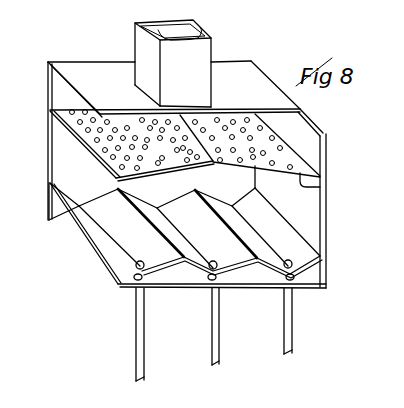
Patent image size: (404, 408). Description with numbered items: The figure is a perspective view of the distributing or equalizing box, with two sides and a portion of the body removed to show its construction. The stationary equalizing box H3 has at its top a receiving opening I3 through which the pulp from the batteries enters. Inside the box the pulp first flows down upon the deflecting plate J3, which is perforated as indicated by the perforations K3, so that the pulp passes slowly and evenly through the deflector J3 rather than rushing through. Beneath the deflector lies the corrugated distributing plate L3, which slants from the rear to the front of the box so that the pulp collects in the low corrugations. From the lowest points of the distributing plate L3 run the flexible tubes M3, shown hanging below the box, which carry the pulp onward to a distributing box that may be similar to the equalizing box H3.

The receiving opening I3 is at (205, 35).
The perforations K3 is at (275, 137).
The stationary equalizing box H3 is at (326, 168).
The deflecting plate J3 is at (360, 174).
The corrugated distributing plate L3 is at (92, 248).
The flexible tubes M3 is at (212, 343).